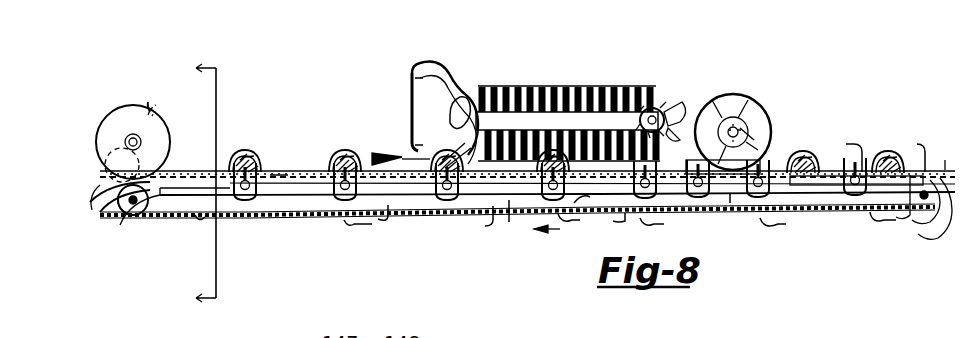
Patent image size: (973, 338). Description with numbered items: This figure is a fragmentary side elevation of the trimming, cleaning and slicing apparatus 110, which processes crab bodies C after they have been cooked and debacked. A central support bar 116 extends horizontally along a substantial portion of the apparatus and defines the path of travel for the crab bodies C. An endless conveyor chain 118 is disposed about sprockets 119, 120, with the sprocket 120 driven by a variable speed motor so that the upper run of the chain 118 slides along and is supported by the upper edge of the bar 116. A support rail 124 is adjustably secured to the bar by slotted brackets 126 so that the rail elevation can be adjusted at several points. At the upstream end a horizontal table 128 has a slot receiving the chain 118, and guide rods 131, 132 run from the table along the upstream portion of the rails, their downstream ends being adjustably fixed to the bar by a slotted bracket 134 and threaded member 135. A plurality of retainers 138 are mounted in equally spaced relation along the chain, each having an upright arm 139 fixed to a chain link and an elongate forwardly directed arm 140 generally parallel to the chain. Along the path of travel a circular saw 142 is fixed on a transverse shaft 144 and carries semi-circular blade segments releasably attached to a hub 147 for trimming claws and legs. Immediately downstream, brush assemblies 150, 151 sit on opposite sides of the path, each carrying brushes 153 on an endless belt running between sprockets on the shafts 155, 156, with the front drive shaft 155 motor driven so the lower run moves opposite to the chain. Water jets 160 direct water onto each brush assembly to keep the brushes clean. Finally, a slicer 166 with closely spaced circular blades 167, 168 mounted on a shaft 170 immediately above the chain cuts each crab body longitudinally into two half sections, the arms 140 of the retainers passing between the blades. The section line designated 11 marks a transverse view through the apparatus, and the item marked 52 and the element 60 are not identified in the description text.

The section line 11- 11 is at (196, 183).
The brush backing bar 52 is at (594, 124).
The support arm 60 is at (418, 163).
The apparatus 110 is at (898, 74).
The central support bar 116 is at (338, 216).
The chain 118 is at (518, 230).
The sprocket 119 is at (948, 228).
The sprocket 120 is at (133, 216).
The support rail 124 is at (309, 160).
The slotted bracket 126 is at (614, 195).
The horizontal table 128 is at (794, 226).
The guide rod 131 is at (940, 162).
The guide rod 132 is at (850, 172).
The slotted bracket 134 is at (718, 202).
The threaded member 135 is at (678, 210).
The retainer 138 is at (200, 230).
The upright arm 139 is at (518, 232).
The forwardly directed arm 140 is at (538, 230).
The circular saw 142 is at (766, 122).
The shaft 144 is at (754, 130).
The hub 147 is at (748, 76).
The brush assembly 150 is at (568, 103).
The brush assembly 151 is at (590, 90).
The brush 153 is at (546, 92).
The front drive shaft 155 is at (664, 106).
The shaft 156 is at (456, 103).
The water jet 160 is at (448, 78).
The slicer 166 is at (146, 106).
The circular blade 167 is at (148, 112).
The circular blade 168 is at (153, 113).
The shaft 170 is at (138, 128).
The crab bodies C is at (242, 153).